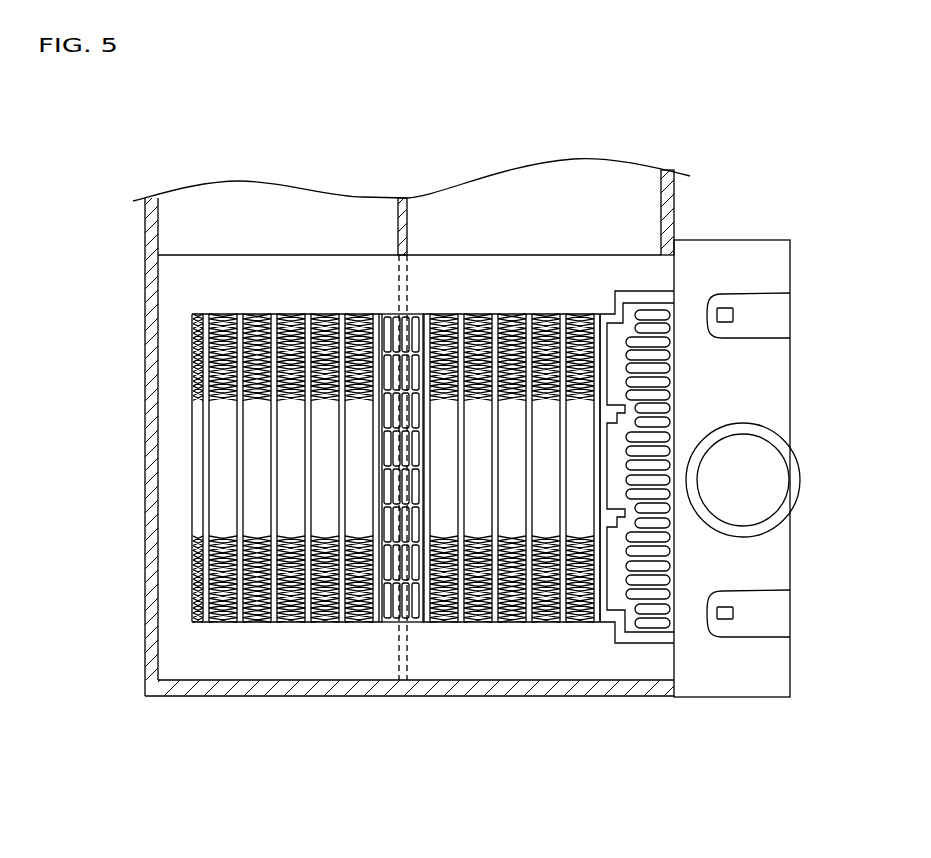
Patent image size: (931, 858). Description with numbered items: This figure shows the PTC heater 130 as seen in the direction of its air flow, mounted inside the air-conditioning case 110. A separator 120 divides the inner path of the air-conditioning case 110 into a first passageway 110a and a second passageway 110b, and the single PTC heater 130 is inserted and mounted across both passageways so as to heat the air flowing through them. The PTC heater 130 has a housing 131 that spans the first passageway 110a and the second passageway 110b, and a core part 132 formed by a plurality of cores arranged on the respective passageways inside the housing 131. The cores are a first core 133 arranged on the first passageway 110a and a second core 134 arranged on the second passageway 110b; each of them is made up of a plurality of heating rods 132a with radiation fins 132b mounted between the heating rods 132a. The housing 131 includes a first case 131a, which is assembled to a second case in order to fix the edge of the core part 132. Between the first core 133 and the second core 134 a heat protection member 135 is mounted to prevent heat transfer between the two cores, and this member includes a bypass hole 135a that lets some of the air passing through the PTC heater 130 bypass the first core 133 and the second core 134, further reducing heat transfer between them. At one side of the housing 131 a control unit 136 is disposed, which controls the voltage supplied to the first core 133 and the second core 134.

The air-conditioning case 110 is at (686, 213).
The first passageway 110a is at (250, 223).
The second passageway 110b is at (497, 227).
The separator 120 is at (399, 225).
The PTC heater 130 is at (547, 240).
The housing 131 is at (503, 663).
The first case 131a is at (192, 468).
The core part 132 is at (364, 557).
The heating rod 132a is at (240, 440).
The radiation fin 132b is at (223, 401).
The first core 133 is at (218, 546).
The second core 134 is at (468, 633).
The heat protection member 135 is at (379, 366).
The bypass hole 135a is at (385, 312).
The control unit 136 is at (760, 407).